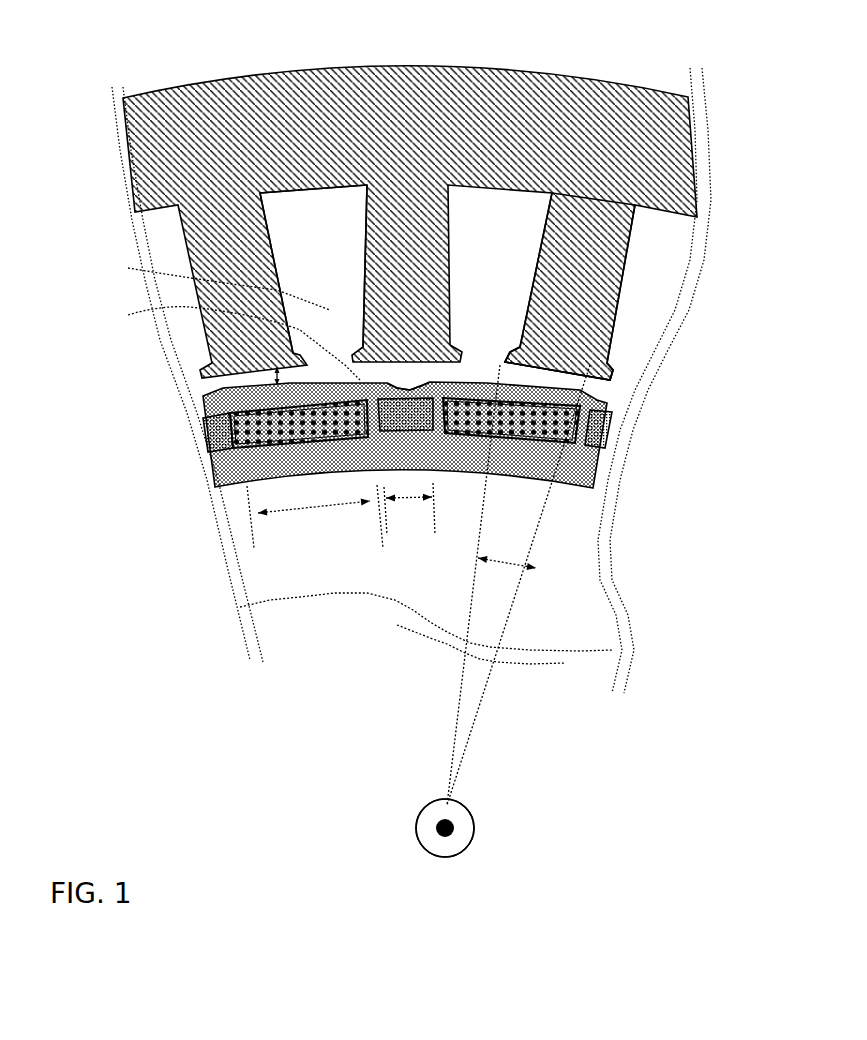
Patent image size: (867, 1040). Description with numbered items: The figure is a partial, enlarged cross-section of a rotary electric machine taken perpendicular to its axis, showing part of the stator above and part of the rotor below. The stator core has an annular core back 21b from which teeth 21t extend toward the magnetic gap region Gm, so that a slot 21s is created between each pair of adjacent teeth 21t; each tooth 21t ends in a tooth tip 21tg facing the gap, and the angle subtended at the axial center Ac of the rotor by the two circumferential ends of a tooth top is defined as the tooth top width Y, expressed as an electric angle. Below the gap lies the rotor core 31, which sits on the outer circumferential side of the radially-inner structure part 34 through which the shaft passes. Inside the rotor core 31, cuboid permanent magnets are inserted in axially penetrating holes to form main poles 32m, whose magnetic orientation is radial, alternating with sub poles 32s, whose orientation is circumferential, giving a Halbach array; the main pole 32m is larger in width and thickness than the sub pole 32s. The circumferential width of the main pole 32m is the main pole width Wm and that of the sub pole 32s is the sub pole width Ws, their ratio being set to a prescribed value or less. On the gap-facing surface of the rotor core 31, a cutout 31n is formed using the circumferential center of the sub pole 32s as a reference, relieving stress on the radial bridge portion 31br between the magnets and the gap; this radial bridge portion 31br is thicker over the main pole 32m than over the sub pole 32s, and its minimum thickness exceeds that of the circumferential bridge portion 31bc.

The core back 21b is at (400, 65).
The slot 21s is at (370, 383).
The tooth 21t is at (318, 277).
The tooth tip 21tg is at (612, 367).
The rotor core 31 is at (190, 482).
The cutout 31n is at (408, 383).
The circumferential bridge portion 31bc is at (205, 287).
The radial bridge portion 31br is at (220, 343).
The main pole 32m is at (205, 420).
The sub pole 32s is at (273, 258).
The radially-inner structure part 34 is at (258, 582).
The magnetic gap region Gm is at (268, 381).
The main pole width Wm is at (315, 516).
The sub pole width Ws is at (409, 509).
The tooth top width Y is at (518, 585).
The axial center Ac is at (429, 828).